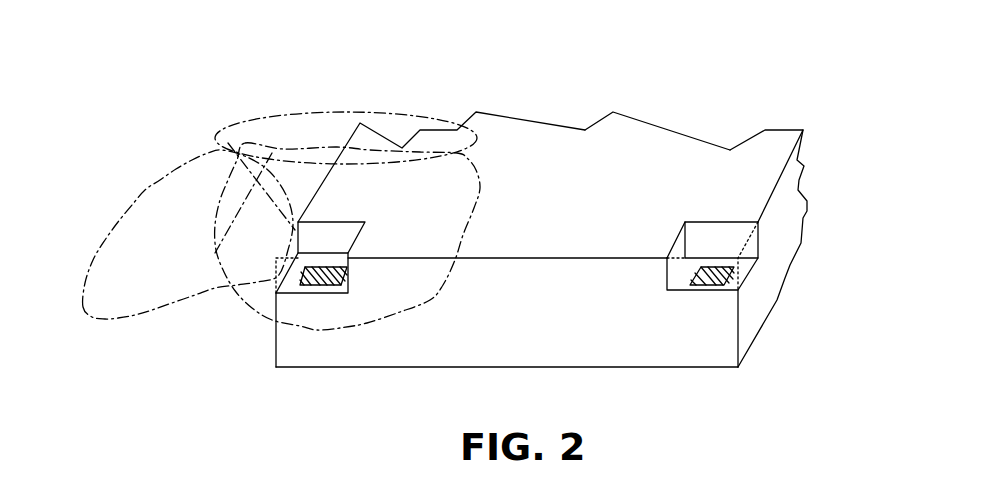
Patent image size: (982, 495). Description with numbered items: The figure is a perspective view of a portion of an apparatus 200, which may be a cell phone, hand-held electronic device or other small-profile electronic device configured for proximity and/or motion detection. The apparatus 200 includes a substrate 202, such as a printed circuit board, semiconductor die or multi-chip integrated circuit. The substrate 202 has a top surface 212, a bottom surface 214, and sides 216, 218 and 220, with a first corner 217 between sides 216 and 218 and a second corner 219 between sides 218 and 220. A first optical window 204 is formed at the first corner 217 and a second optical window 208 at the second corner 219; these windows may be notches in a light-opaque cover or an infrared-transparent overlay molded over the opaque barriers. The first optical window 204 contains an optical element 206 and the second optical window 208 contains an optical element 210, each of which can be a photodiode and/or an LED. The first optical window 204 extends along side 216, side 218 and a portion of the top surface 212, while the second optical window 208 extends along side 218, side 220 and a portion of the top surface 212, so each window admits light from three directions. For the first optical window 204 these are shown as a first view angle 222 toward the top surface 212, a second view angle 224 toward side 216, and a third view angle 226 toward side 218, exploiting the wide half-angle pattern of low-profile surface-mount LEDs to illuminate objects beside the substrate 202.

The apparatus 200 is at (240, 60).
The substrate 202 is at (537, 130).
The first optical window 204 is at (332, 235).
The optical element 206 is at (345, 273).
The second optical window 208 is at (693, 233).
The optical element 210 is at (700, 285).
The top surface 212 is at (603, 152).
The bottom surface 214 is at (622, 367).
The side 216 is at (276, 338).
The first corner 217 is at (276, 367).
The side 218 is at (527, 317).
The second corner 219 is at (738, 367).
The side 220 is at (767, 282).
The first view angle 222 is at (325, 112).
The second view angle 224 is at (143, 190).
The third view angle 226 is at (333, 333).